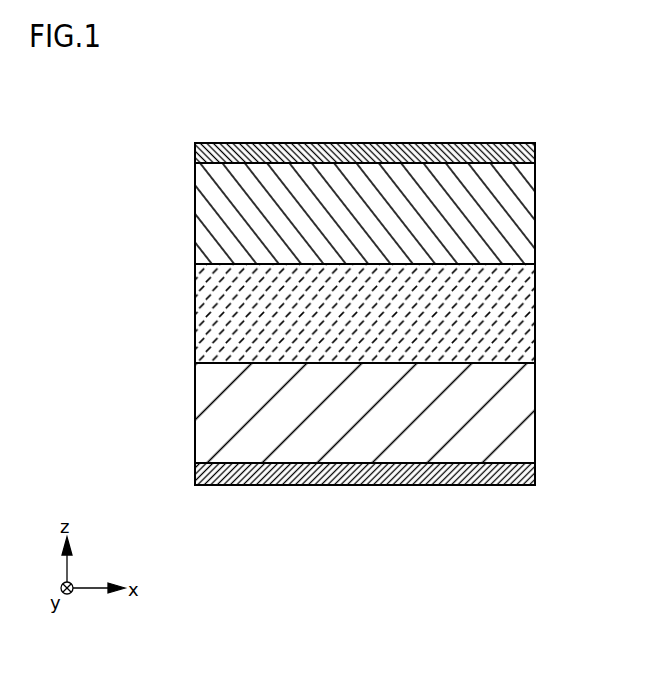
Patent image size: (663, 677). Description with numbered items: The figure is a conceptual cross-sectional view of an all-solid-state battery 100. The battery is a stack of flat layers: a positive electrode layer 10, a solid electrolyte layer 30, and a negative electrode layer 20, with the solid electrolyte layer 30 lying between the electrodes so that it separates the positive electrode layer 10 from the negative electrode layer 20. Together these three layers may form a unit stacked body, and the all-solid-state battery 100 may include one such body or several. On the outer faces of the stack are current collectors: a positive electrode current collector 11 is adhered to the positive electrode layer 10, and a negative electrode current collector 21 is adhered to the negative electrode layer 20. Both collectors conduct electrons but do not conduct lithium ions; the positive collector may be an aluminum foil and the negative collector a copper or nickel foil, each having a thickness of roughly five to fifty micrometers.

The all-solid-state battery 100 is at (175, 117).
The negative electrode current collector 21 is at (535, 152).
The negative electrode layer 20 is at (195, 215).
The solid electrolyte layer 30 is at (195, 320).
The positive electrode layer 10 is at (195, 418).
The positive electrode current collector 11 is at (535, 473).